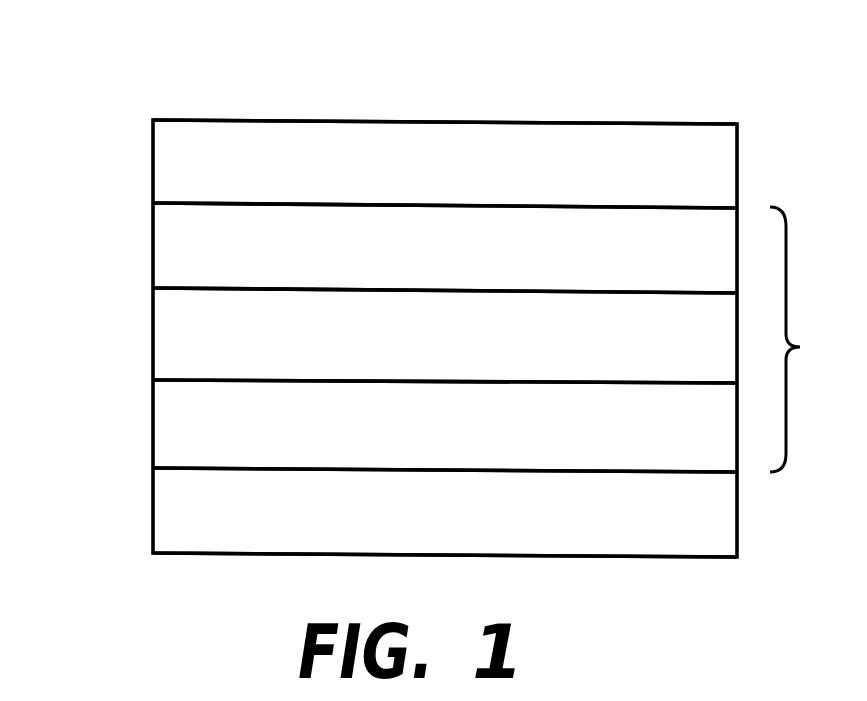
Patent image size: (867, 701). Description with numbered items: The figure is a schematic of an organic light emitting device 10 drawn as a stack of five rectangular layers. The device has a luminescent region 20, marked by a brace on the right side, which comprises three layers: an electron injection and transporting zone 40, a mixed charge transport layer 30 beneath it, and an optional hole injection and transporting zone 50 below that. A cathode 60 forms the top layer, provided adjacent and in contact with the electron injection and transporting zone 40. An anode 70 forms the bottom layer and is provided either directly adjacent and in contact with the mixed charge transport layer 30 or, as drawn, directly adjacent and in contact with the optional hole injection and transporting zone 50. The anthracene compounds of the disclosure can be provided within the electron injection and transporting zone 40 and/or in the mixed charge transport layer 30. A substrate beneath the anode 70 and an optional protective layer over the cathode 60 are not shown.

The organic light emitting device 10 is at (176, 101).
The luminescent region 20 is at (811, 339).
The mixed charge transport layer 30 is at (153, 336).
The electron injection and transporting zone 40 is at (153, 243).
The hole injection and transporting zone 50 is at (153, 423).
The cathode 60 is at (153, 168).
The anode 70 is at (153, 508).